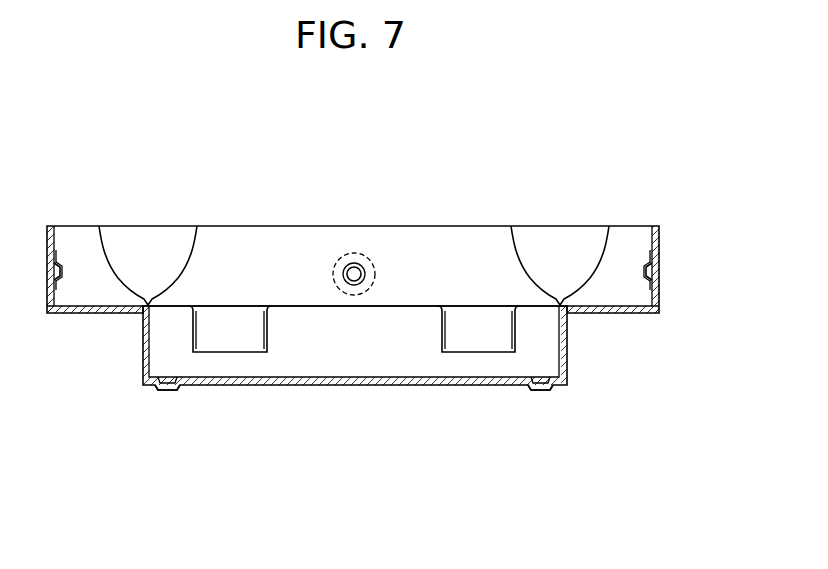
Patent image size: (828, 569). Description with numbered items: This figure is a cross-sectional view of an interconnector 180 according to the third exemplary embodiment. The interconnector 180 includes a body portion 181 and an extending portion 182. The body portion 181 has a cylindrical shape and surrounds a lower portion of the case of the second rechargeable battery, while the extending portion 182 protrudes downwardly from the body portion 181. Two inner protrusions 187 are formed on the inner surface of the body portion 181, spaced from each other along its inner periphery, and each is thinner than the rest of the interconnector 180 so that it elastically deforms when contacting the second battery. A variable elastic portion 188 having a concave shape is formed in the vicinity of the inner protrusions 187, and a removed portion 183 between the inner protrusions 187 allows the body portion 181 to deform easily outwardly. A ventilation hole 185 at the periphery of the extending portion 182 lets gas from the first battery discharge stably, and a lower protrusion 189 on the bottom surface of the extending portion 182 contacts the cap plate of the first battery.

The interconnector 180 is at (465, 227).
The body portion 181 is at (660, 297).
The extending portion 182 is at (569, 366).
The removed portion 183 is at (181, 226).
The ventilation hole 185 is at (193, 333).
The inner protrusion 187 is at (356, 263).
The variable elastic portion 188 is at (339, 259).
The lower protrusion 189 is at (540, 391).